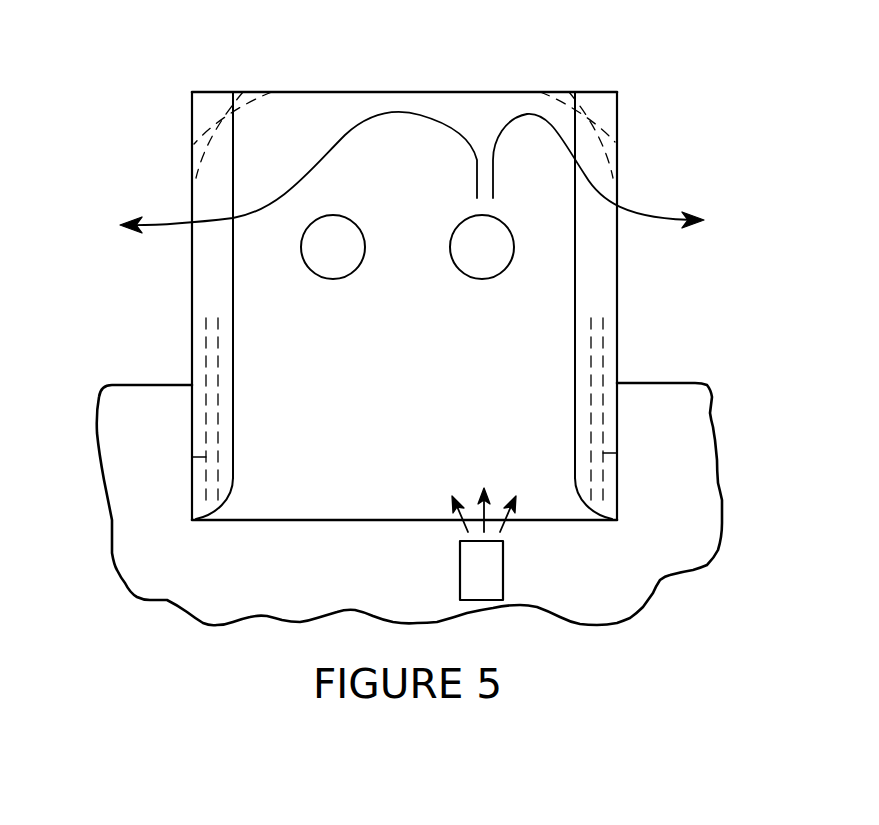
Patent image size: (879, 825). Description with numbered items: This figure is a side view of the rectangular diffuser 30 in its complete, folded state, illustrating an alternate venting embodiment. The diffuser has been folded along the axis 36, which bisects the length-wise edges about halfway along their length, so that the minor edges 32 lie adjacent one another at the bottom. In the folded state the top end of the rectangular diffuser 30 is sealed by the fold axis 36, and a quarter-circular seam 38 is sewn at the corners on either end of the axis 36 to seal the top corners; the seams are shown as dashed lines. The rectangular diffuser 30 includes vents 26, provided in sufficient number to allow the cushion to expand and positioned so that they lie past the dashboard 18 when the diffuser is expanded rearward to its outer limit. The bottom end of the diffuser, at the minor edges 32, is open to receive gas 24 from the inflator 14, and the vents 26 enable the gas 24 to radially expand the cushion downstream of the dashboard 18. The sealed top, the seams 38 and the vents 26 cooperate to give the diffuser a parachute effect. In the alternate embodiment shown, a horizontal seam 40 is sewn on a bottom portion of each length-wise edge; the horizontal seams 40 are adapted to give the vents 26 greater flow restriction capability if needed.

The inflator 14 is at (460, 565).
The dashboard 18 is at (685, 383).
The gas 24 is at (162, 223).
The vents 26 is at (482, 258).
The rectangular diffuser 30 is at (627, 64).
The minor edges 32 is at (235, 522).
The axis 36 is at (372, 91).
The quarter-circular seam 38 is at (190, 120).
The horizontal seam 40 is at (190, 456).